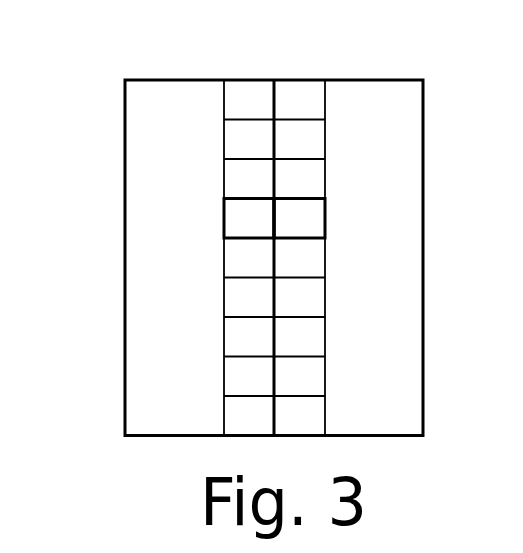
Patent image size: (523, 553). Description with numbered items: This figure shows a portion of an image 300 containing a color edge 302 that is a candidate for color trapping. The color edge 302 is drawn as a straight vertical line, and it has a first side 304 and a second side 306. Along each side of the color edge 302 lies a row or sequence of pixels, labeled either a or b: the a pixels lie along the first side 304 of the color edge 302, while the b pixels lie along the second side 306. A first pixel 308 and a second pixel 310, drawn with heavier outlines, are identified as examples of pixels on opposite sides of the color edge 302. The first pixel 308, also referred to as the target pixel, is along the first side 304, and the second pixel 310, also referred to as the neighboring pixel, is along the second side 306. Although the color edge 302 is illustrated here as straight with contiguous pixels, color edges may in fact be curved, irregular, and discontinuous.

The image 300 is at (124, 84).
The color edge 302 is at (274, 78).
The first side 304 is at (233, 78).
The second side 306 is at (306, 74).
The first pixel 308 is at (236, 213).
The second pixel 310 is at (315, 212).